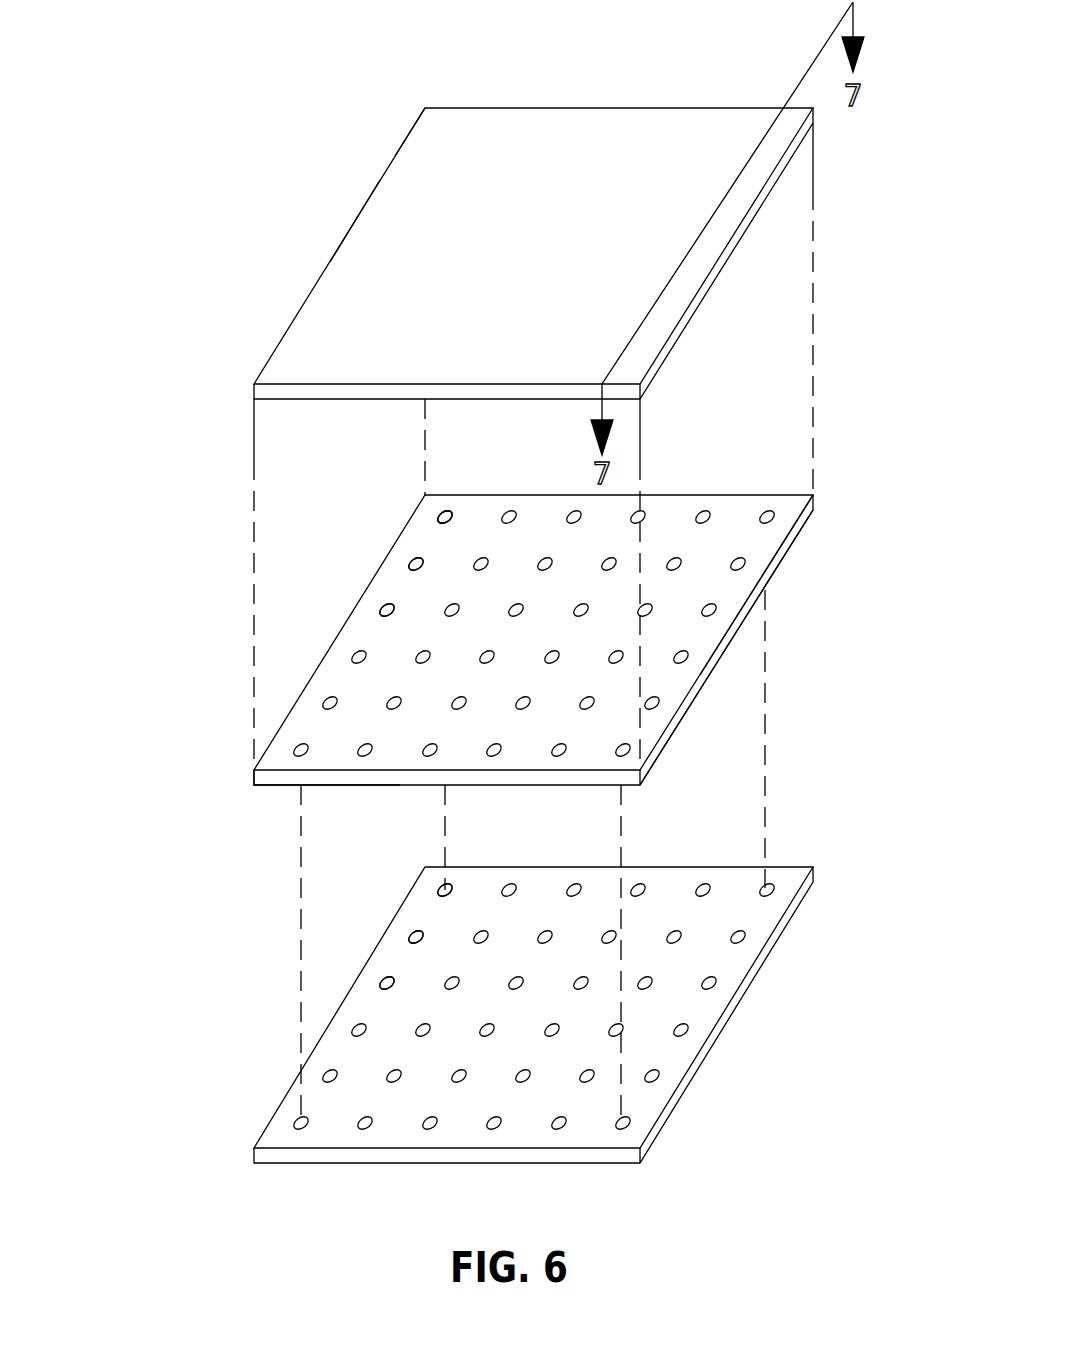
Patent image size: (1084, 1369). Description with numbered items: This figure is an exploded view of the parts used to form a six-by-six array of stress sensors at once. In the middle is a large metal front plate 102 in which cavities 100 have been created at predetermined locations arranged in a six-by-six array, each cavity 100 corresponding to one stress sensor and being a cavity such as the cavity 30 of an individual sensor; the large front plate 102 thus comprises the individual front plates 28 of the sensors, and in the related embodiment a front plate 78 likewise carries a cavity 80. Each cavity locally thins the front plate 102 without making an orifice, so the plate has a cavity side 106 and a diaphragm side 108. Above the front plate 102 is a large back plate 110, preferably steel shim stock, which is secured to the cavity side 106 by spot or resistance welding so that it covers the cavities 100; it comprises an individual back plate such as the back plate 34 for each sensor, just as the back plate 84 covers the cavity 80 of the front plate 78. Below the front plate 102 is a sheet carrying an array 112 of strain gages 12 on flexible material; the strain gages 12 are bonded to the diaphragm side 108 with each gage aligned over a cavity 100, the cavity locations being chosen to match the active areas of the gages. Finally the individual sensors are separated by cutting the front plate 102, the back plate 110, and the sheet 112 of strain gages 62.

The strain gage 12 is at (356, 1030).
The front plate 28 is at (582, 601).
The cavity 30 is at (480, 562).
The back plate 34 is at (385, 173).
The strain gages 62 is at (386, 984).
The front plate 78 is at (733, 627).
The cavity 80 is at (447, 516).
The back plate 84 is at (414, 125).
The cavities 100 is at (480, 562).
The large metal front plate 102 is at (254, 778).
The cavity side 106 is at (765, 537).
The diaphragm side 108 is at (687, 750).
The large back plate 110 is at (354, 223).
The array of strain gages 112 is at (473, 989).